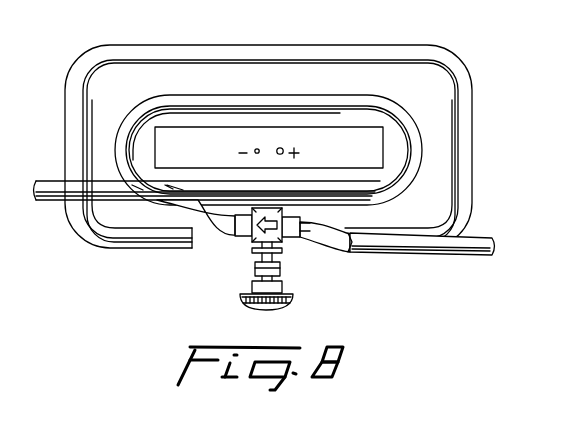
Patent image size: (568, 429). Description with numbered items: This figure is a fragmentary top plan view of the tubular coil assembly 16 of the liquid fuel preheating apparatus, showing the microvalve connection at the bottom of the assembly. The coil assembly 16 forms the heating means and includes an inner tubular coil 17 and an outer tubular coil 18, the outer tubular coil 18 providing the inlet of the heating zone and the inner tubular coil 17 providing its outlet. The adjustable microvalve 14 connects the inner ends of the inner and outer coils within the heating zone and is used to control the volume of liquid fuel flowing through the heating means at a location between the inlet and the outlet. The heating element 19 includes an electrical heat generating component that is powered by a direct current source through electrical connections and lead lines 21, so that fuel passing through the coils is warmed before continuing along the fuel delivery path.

The microvalve 14 is at (283, 268).
The coil assembly 16 is at (65, 106).
The inner tubular coil 17 is at (400, 104).
The outer tubular coil 18 is at (100, 58).
The heating element 19 is at (212, 158).
The lead lines 21 is at (282, 147).